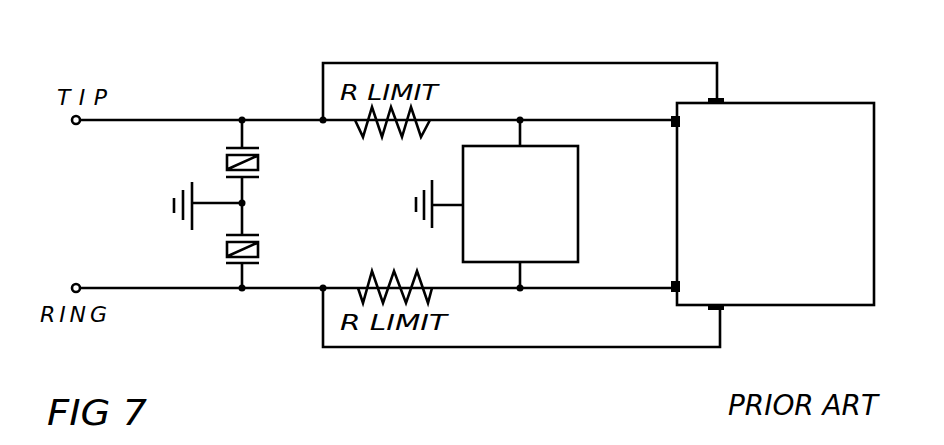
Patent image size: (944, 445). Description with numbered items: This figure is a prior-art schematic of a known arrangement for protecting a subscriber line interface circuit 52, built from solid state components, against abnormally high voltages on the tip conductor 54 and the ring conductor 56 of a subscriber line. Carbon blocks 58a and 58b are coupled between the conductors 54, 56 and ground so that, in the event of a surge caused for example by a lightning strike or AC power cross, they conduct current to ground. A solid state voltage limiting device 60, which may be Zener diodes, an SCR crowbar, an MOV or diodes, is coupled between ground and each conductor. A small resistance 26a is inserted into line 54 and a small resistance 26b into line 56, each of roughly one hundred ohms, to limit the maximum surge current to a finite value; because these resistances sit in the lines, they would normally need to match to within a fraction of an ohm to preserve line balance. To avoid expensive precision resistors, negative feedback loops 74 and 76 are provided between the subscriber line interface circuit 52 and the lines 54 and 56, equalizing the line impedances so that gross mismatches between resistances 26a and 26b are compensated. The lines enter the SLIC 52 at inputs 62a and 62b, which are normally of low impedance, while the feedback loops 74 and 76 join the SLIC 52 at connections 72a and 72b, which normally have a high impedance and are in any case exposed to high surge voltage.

The subscriber line interface circuit 52 is at (857, 297).
The tip conductor 54 is at (178, 119).
The ring conductor 56 is at (195, 289).
The carbon block 58a is at (252, 162).
The carbon block 58b is at (252, 250).
The small resistance 26a is at (352, 126).
The small resistance 26b is at (368, 278).
The solid state voltage limiting device 60 is at (578, 207).
The input of SLIC 62a is at (673, 118).
The input of SLIC 62b is at (672, 292).
The connection of feedback loop 72a is at (718, 98).
The connection of feedback loop 72b is at (722, 307).
The negative feedback loop 74 is at (573, 63).
The negative feedback loop 76 is at (567, 347).